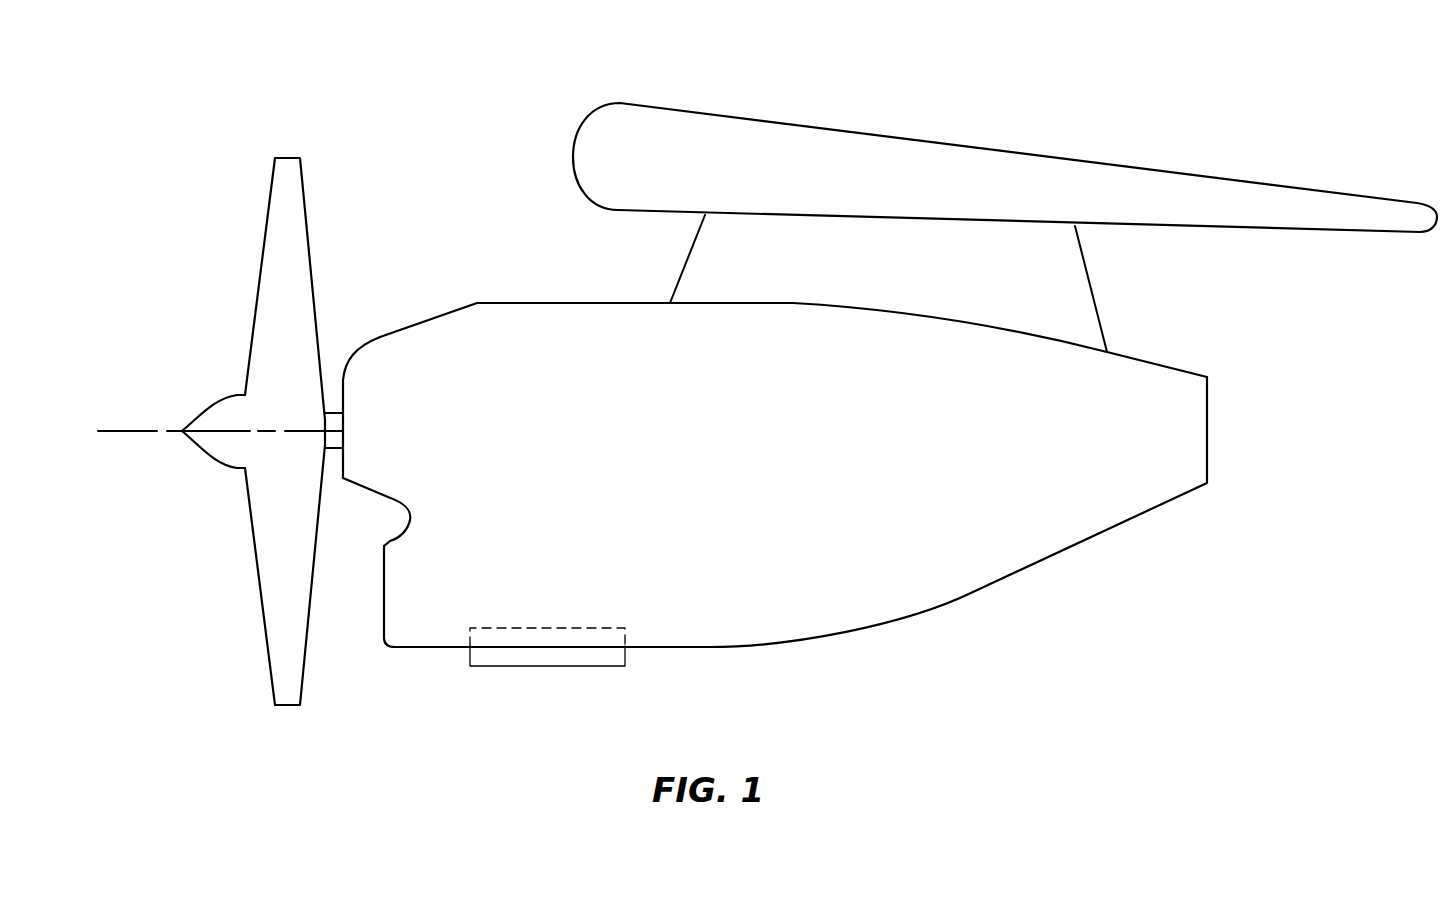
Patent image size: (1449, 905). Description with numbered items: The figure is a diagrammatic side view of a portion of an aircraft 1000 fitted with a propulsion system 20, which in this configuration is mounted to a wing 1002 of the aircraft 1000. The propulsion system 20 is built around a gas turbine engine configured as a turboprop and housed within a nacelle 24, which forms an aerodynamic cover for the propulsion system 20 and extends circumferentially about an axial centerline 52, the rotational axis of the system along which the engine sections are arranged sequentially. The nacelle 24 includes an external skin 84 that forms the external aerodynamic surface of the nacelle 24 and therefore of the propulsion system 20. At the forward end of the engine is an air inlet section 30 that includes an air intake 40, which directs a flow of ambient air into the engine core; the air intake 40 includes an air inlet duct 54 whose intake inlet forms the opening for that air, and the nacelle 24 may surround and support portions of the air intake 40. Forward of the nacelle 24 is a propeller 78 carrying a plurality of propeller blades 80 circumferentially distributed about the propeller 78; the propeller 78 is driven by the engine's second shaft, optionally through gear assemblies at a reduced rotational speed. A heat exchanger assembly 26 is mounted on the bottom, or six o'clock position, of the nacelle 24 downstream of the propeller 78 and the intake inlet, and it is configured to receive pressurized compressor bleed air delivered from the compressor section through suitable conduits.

The aircraft 1000 is at (1146, 108).
The wing 1002 is at (1182, 197).
The propulsion system 20 is at (982, 624).
The nacelle 24 is at (727, 652).
The heat exchanger assembly 26 is at (530, 666).
The air inlet section 30 is at (369, 666).
The air intake 40 is at (428, 598).
The axial centerline 52 is at (133, 431).
The air inlet duct 54 is at (383, 600).
The propeller 78 is at (229, 262).
The propeller blades 80 is at (278, 198).
The external skin 84 is at (645, 648).